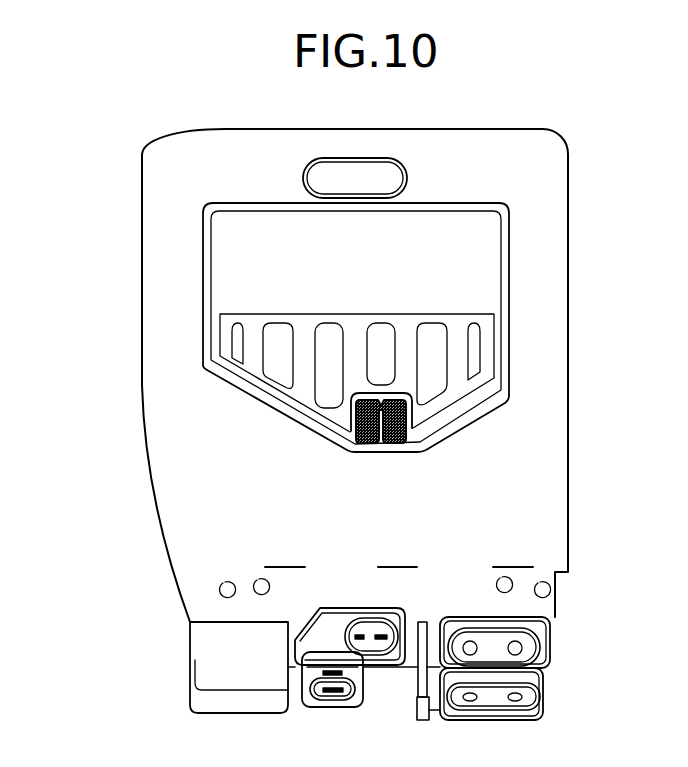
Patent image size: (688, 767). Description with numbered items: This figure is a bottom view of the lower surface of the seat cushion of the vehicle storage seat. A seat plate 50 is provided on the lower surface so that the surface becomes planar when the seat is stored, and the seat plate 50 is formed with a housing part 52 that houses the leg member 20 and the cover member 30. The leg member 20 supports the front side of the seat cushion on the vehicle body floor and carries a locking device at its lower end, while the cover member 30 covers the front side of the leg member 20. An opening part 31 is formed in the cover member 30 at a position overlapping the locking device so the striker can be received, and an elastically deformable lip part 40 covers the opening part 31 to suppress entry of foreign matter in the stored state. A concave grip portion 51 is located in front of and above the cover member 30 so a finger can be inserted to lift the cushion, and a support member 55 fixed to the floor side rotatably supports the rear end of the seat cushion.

The leg member 20 is at (415, 318).
The cover member 30 is at (497, 378).
The opening part 31 is at (356, 410).
The lip part 40 is at (395, 430).
The seat plate 50 is at (188, 393).
The grip portion 51 is at (383, 170).
The housing part 52 is at (507, 338).
The support member 55 is at (215, 697).